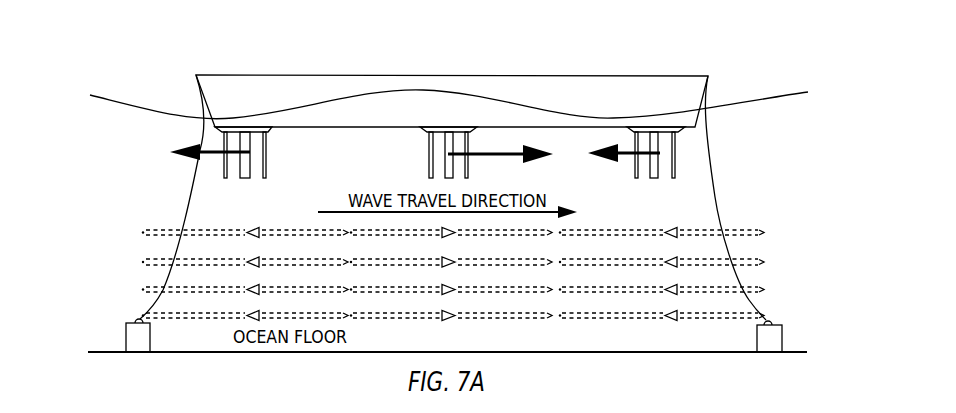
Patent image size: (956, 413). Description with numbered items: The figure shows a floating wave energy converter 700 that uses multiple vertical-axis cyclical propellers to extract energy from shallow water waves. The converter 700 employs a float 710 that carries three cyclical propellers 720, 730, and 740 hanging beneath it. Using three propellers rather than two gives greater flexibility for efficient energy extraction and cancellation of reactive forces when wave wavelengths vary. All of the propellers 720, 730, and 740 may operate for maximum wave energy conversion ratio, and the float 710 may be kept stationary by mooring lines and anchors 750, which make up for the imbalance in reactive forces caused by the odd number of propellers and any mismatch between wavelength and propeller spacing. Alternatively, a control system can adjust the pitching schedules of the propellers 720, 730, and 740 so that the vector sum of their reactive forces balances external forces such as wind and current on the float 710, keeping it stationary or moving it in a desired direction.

The wave energy converter 700 is at (168, 67).
The float 710 is at (277, 104).
The cyclical propeller 720 is at (272, 128).
The cyclical propeller 730 is at (420, 128).
The cyclical propeller 740 is at (684, 129).
The mooring lines and anchors 750 is at (127, 338).